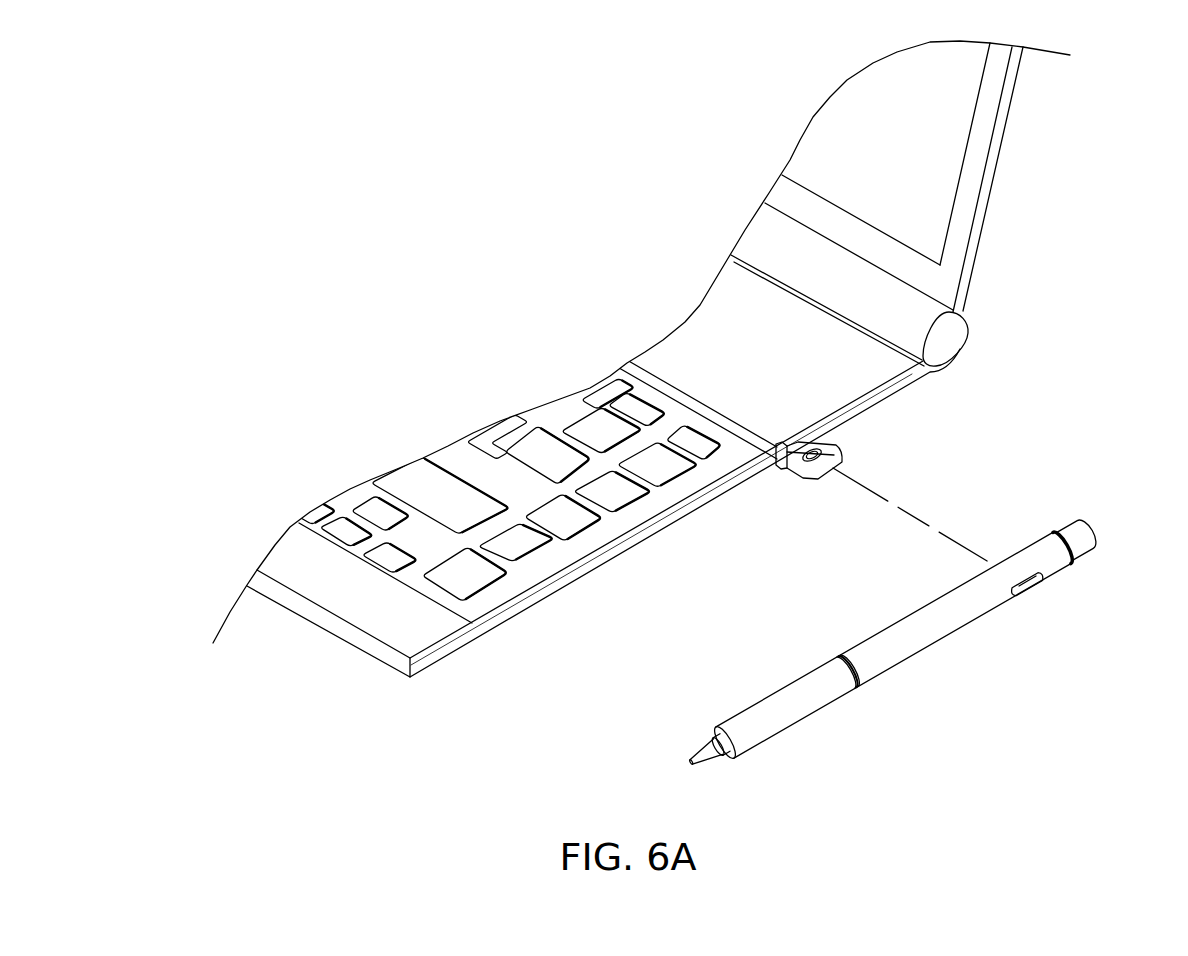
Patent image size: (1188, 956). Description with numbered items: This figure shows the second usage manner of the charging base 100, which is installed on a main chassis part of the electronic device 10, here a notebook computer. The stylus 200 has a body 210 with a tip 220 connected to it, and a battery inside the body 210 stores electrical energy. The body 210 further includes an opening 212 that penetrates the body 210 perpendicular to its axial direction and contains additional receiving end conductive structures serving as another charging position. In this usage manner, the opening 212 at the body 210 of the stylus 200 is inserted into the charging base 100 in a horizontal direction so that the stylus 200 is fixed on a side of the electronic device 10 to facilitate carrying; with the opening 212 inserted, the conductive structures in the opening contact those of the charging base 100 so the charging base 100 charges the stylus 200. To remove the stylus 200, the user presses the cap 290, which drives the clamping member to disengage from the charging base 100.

The electronic device 10 is at (893, 388).
The charging base 100 is at (838, 494).
The stylus 200 is at (909, 591).
The body 210 is at (911, 646).
The opening 212 is at (1042, 604).
The tip 220 is at (697, 746).
The cap 290 is at (1098, 538).